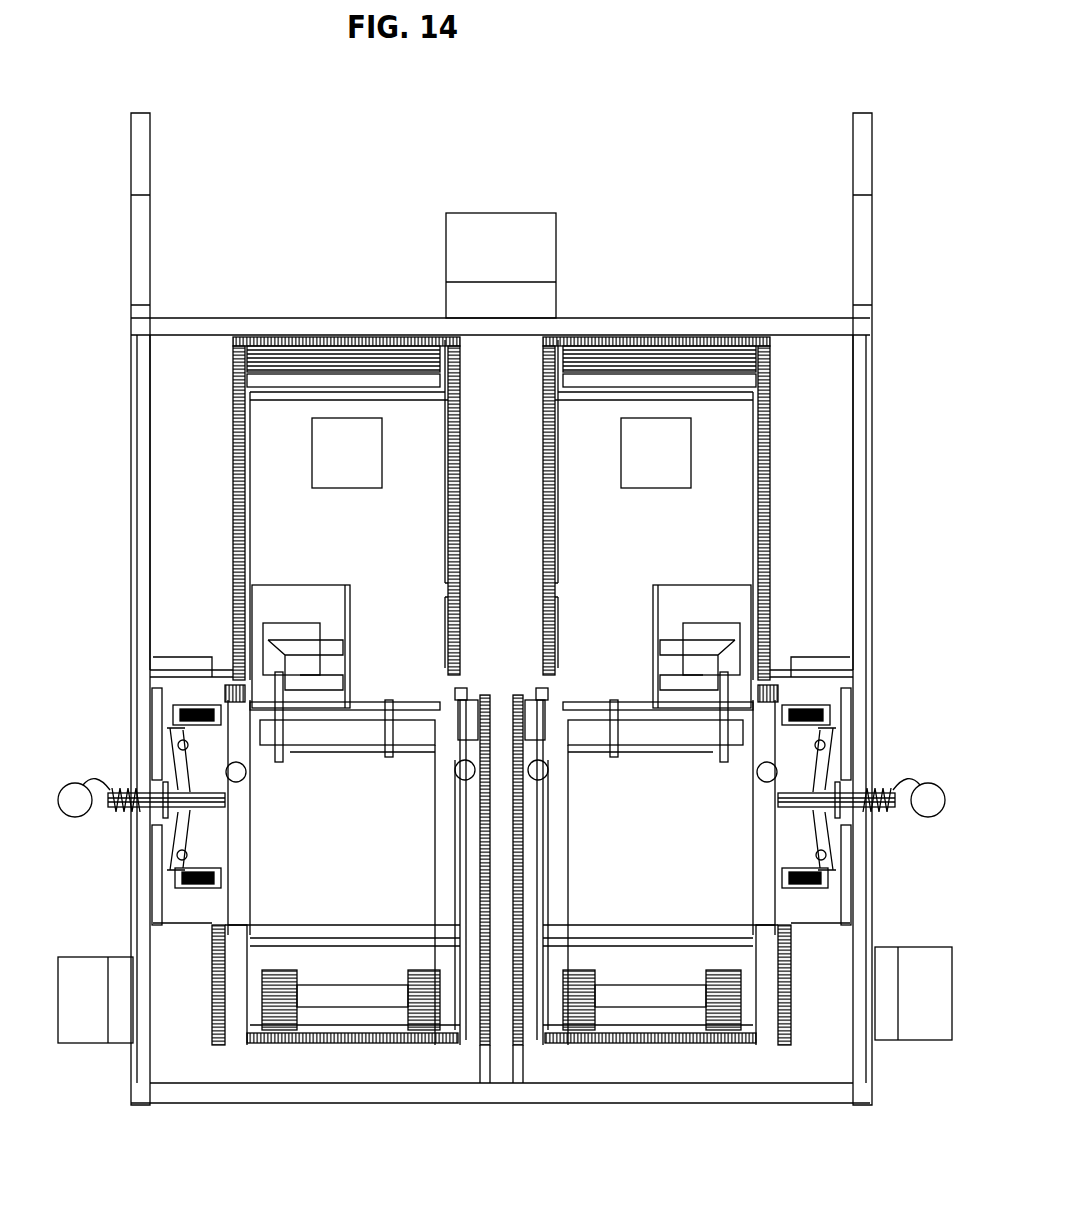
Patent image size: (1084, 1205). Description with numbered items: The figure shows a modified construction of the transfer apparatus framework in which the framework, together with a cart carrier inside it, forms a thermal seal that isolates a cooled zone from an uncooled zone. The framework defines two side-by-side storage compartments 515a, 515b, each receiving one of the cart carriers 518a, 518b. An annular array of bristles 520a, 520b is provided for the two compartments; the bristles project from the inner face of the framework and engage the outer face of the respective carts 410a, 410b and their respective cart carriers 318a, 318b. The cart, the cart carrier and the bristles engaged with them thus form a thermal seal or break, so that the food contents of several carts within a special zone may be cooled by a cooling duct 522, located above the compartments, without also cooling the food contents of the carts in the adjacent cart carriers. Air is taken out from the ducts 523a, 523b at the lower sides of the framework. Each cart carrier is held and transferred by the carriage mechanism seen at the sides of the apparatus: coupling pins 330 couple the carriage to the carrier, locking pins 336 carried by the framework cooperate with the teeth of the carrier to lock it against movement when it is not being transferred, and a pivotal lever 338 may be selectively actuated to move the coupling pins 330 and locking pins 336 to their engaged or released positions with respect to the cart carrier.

The cooling duct 522 is at (540, 245).
The cart carrier 518a is at (323, 403).
The cart carrier 518b is at (705, 398).
The storage compartment 515a is at (358, 342).
The storage compartment 515b is at (640, 330).
The annular array of bristles 520a is at (256, 522).
The annular array of bristles 520b is at (548, 522).
The cart 410a is at (346, 487).
The cart 410b is at (691, 487).
The cart carrier 318a is at (405, 846).
The cart carrier 318b is at (717, 846).
The coupling pins 330 is at (235, 688).
The locking pins 336 is at (236, 797).
The pivotal lever 338 is at (212, 835).
The duct 523a is at (85, 1010).
The duct 523b is at (935, 1025).